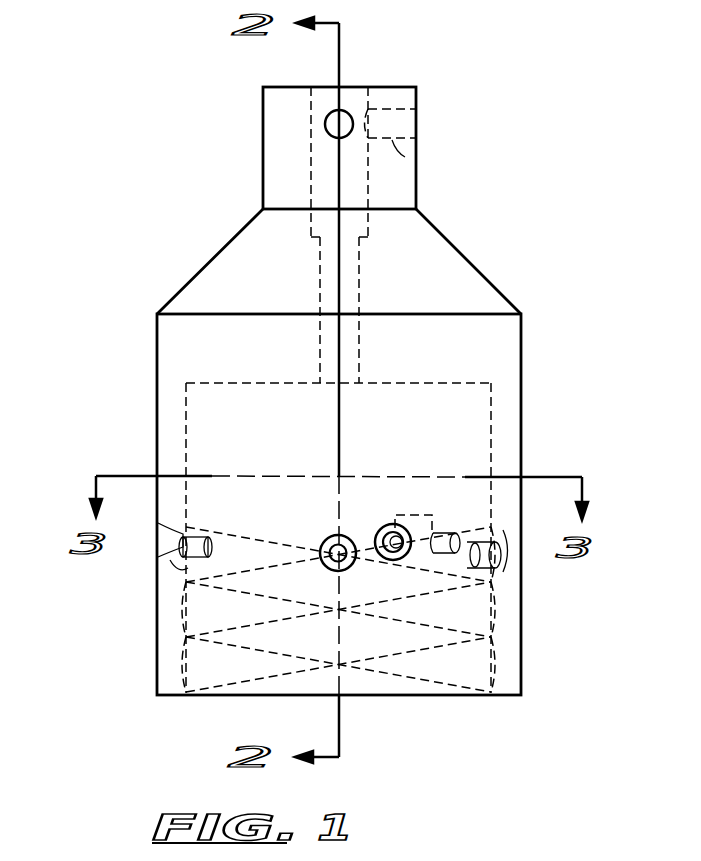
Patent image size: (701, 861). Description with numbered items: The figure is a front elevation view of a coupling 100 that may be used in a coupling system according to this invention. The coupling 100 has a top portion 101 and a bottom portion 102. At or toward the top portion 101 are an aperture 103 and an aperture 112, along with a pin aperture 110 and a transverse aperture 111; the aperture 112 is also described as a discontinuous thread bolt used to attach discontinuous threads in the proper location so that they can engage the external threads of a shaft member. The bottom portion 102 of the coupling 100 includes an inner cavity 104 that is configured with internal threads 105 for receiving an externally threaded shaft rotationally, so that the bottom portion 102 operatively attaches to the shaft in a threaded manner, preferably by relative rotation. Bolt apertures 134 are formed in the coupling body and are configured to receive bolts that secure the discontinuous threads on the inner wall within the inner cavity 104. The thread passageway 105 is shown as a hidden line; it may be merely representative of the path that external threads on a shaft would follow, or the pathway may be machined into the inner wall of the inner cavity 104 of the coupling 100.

The coupling 100 is at (606, 198).
The top portion 101 is at (276, 154).
The bottom portion 102 is at (510, 668).
The aperture 103 is at (366, 336).
The inner cavity 104 is at (480, 438).
The thread passageway 105 is at (266, 527).
The pin aperture 110 is at (347, 115).
The transverse aperture 111 is at (417, 161).
The aperture 112 is at (368, 217).
The bolt apertures 134 is at (157, 563).